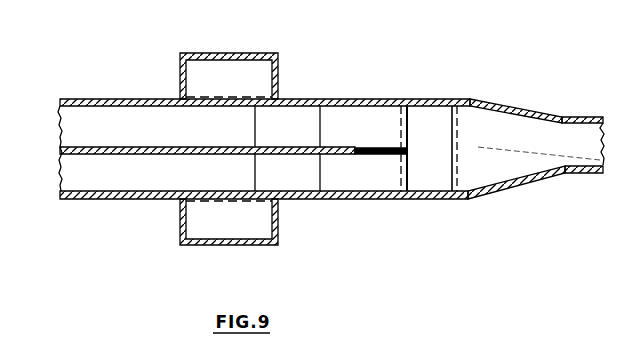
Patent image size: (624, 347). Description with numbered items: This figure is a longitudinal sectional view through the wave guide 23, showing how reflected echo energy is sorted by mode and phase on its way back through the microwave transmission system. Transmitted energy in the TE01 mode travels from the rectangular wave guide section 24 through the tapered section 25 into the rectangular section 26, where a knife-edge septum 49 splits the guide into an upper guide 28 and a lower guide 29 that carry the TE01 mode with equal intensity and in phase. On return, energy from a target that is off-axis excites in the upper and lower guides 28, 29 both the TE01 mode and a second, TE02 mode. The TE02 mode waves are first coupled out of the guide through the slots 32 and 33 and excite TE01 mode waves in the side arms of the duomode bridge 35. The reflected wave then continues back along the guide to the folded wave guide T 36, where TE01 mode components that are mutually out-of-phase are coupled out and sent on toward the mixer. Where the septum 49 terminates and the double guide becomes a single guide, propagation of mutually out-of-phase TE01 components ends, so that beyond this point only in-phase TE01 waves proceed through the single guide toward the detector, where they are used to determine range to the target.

The wave guide 23 is at (85, 99).
The rectangular wave guide section 24 is at (580, 117).
The tapered section 25 is at (510, 103).
The rectangular section 26 is at (380, 99).
The upper guide 28 is at (75, 140).
The lower guide 29 is at (82, 185).
The slot 32 is at (197, 103).
The slot 33 is at (208, 195).
The duomode bridge 35 is at (213, 53).
The folded wave guide T 36 is at (420, 177).
The septum 49 is at (350, 147).